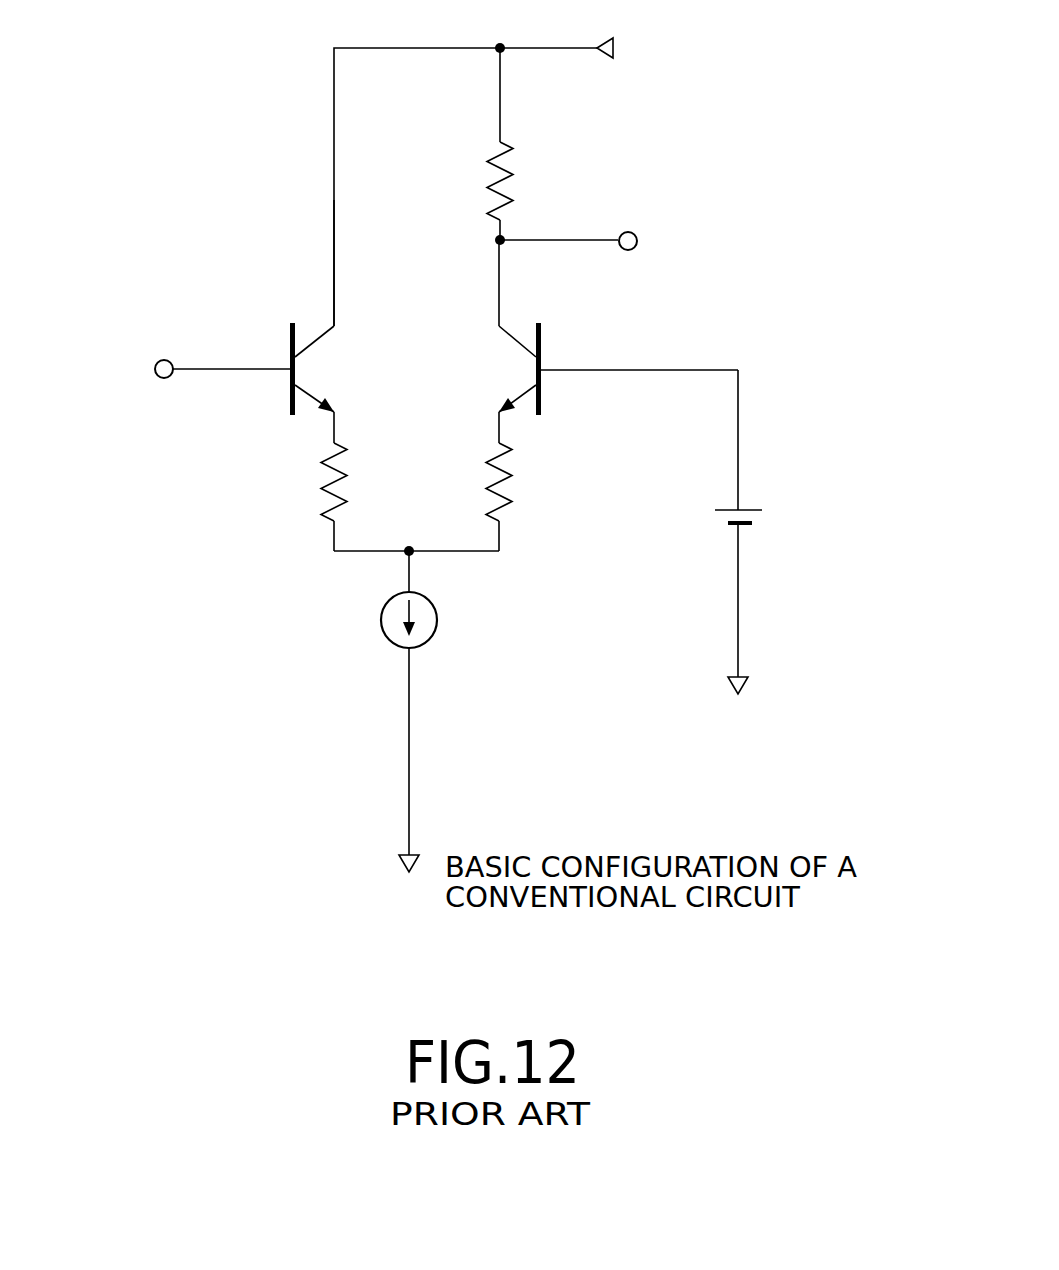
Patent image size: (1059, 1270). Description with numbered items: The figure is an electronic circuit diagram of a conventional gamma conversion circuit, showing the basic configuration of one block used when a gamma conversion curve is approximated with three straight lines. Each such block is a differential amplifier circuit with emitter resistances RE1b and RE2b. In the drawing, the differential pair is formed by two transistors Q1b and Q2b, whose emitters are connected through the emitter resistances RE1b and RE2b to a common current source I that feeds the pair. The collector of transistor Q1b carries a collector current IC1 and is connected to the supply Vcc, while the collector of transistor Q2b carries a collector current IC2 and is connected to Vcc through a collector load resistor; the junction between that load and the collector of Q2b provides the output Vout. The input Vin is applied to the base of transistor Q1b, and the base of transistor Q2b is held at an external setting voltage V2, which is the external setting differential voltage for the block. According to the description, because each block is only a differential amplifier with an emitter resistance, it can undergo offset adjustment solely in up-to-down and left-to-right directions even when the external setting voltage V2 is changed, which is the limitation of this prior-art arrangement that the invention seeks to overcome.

The first transistor Q1b is at (335, 369).
The second transistor Q2b is at (593, 369).
The emitter resistance RE1b is at (298, 481).
The emitter resistance RE2b is at (534, 481).
The collector current of first transistor IC1 is at (312, 263).
The collector current of second transistor IC2 is at (522, 283).
The constant current source I is at (416, 709).
The external setting voltage V2 is at (818, 532).
The power supply voltage Vcc is at (505, 182).
The input voltage Vin is at (171, 387).
The output voltage Vout is at (634, 181).